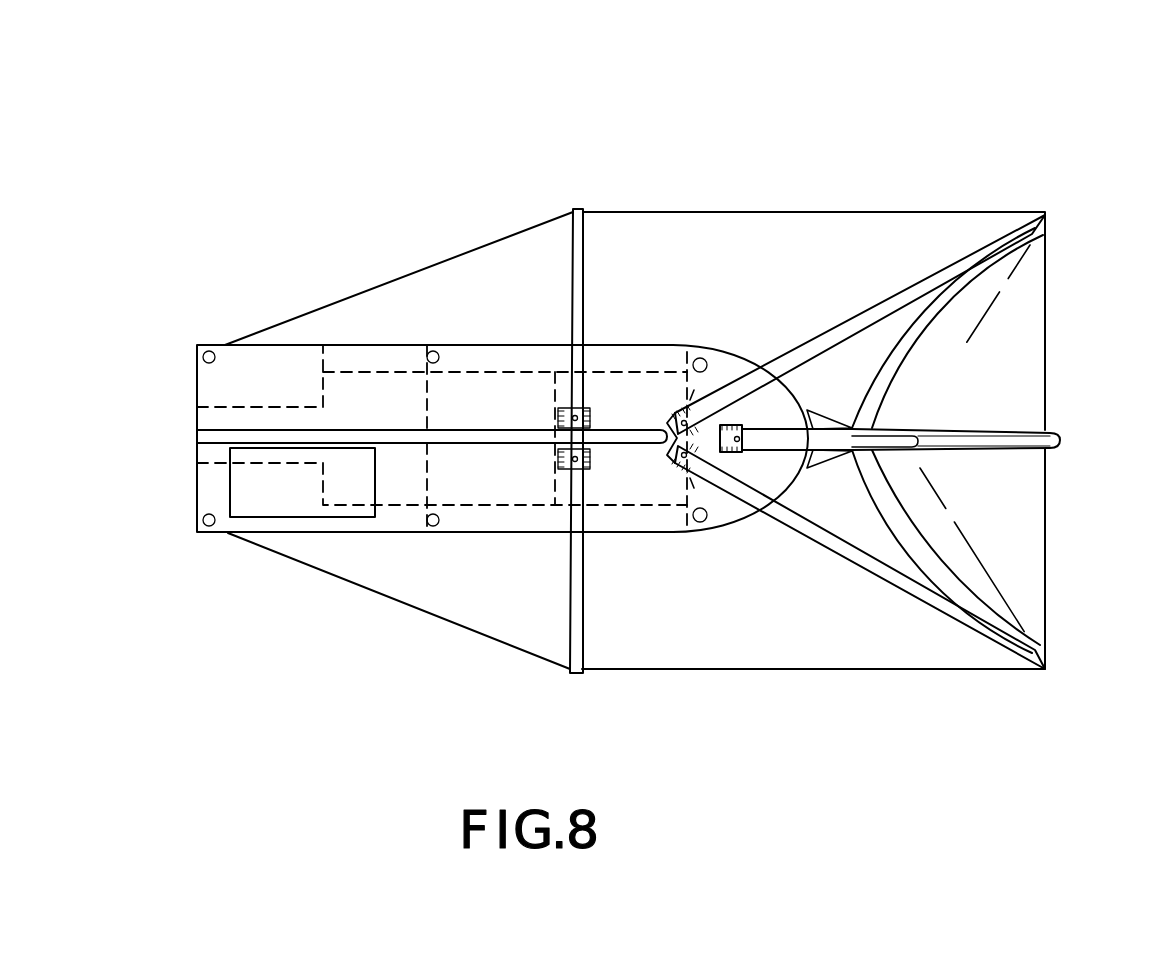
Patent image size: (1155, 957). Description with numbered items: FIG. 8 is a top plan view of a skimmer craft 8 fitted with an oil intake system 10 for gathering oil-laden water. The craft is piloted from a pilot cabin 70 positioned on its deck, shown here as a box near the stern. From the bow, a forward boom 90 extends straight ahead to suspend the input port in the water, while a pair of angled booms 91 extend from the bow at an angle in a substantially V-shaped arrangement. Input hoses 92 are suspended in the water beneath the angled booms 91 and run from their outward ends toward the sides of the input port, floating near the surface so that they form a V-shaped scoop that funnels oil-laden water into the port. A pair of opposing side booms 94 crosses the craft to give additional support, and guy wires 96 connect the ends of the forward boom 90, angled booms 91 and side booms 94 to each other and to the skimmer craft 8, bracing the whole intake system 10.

The skimmer craft 8 is at (538, 146).
The intake system 10 is at (1022, 334).
The pilot cabin 70 is at (265, 503).
The forward boom 90 is at (987, 451).
The angled booms 91 is at (937, 270).
The input hoses 92 is at (919, 339).
The side booms 94 is at (584, 286).
The guy wires 96 is at (491, 241).